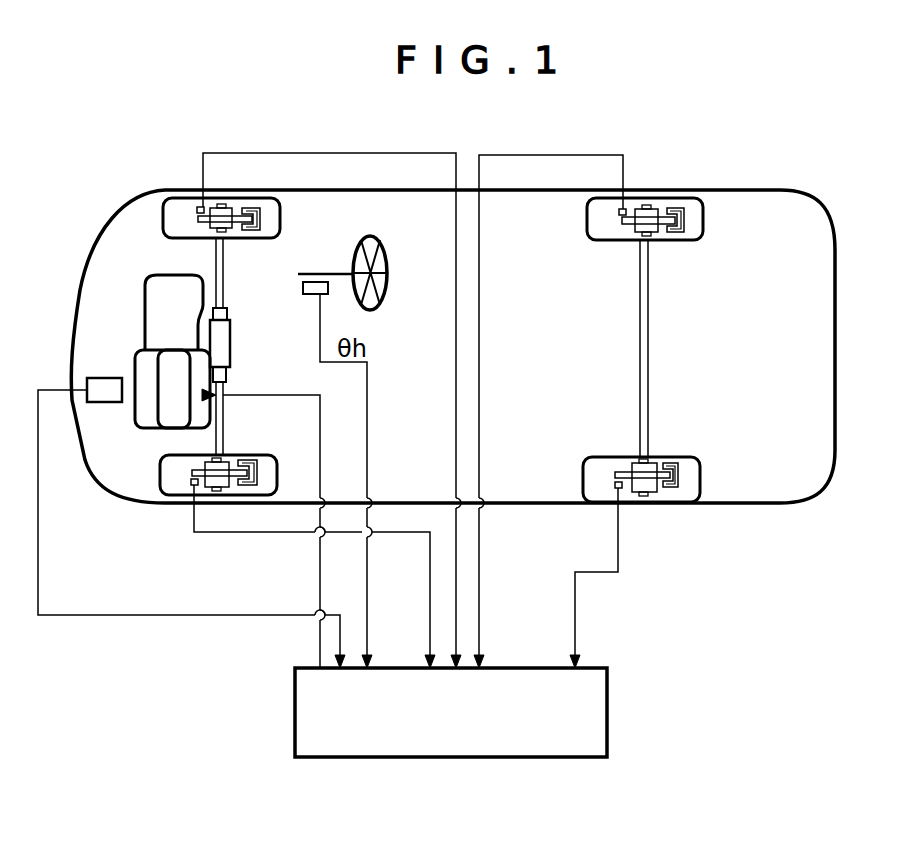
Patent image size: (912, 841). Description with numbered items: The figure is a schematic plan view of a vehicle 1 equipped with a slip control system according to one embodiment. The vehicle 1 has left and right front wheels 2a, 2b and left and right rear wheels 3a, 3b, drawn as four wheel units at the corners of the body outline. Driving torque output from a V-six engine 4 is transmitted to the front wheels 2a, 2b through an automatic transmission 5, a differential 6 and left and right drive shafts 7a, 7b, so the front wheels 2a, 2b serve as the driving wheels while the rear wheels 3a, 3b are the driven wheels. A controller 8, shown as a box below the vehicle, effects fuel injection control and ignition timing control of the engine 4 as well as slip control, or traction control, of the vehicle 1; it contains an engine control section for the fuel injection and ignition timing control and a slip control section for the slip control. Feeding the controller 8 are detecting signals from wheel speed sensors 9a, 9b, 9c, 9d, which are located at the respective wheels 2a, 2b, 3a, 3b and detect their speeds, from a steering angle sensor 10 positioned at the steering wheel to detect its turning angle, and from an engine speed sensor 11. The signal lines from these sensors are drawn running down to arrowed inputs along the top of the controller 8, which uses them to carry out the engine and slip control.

The vehicle 1 is at (386, 186).
The left front wheel 2a is at (162, 480).
The right front wheel 2b is at (165, 228).
The left rear wheel 3a is at (702, 460).
The right rear wheel 3b is at (705, 232).
The V-6 engine 4 is at (136, 428).
The automatic transmission 5 is at (146, 287).
The differential 6 is at (231, 348).
The left drive shaft 7a is at (225, 420).
The right drive shaft 7b is at (215, 258).
The controller 8 is at (458, 760).
The wheel speed sensor 9a is at (191, 484).
The wheel speed sensor 9b is at (197, 211).
The wheel speed sensor 9c is at (614, 488).
The wheel speed sensor 9d is at (626, 210).
The steering angle sensor 10 is at (302, 296).
The engine speed sensor 11 is at (106, 377).